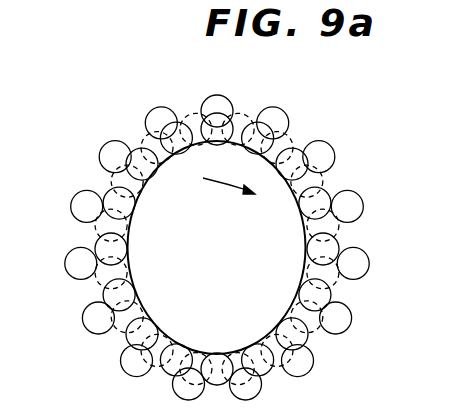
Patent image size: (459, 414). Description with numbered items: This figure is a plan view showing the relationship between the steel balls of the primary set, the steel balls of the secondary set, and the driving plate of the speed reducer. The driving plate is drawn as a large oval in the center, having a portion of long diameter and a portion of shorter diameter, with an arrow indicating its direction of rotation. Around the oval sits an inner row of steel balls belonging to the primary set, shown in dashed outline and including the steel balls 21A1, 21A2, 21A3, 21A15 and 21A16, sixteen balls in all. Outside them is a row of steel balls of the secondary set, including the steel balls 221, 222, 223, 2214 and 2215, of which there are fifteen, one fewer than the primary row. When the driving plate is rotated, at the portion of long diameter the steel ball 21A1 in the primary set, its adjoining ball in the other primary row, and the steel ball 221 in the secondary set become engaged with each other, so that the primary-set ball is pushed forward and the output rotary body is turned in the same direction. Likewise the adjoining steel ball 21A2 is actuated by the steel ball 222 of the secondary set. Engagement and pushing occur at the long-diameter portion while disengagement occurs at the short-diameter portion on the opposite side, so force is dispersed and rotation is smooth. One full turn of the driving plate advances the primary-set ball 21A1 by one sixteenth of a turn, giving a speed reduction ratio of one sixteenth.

The steel ball in the secondary set 221 is at (218, 96).
The steel ball in the primary set 21A1 is at (232, 127).
The steel ball in the secondary set 222 is at (287, 111).
The steel ball in the primary set 21A2 is at (284, 143).
The steel ball in the secondary set 223 is at (335, 152).
The steel ball in the primary set 21A3 is at (323, 178).
The steel ball in the secondary set 2215 is at (160, 107).
The steel ball in the primary set 21A16 is at (173, 147).
The steel ball in the secondary set 2214 is at (103, 145).
The steel ball in the primary set 21A15 is at (116, 178).